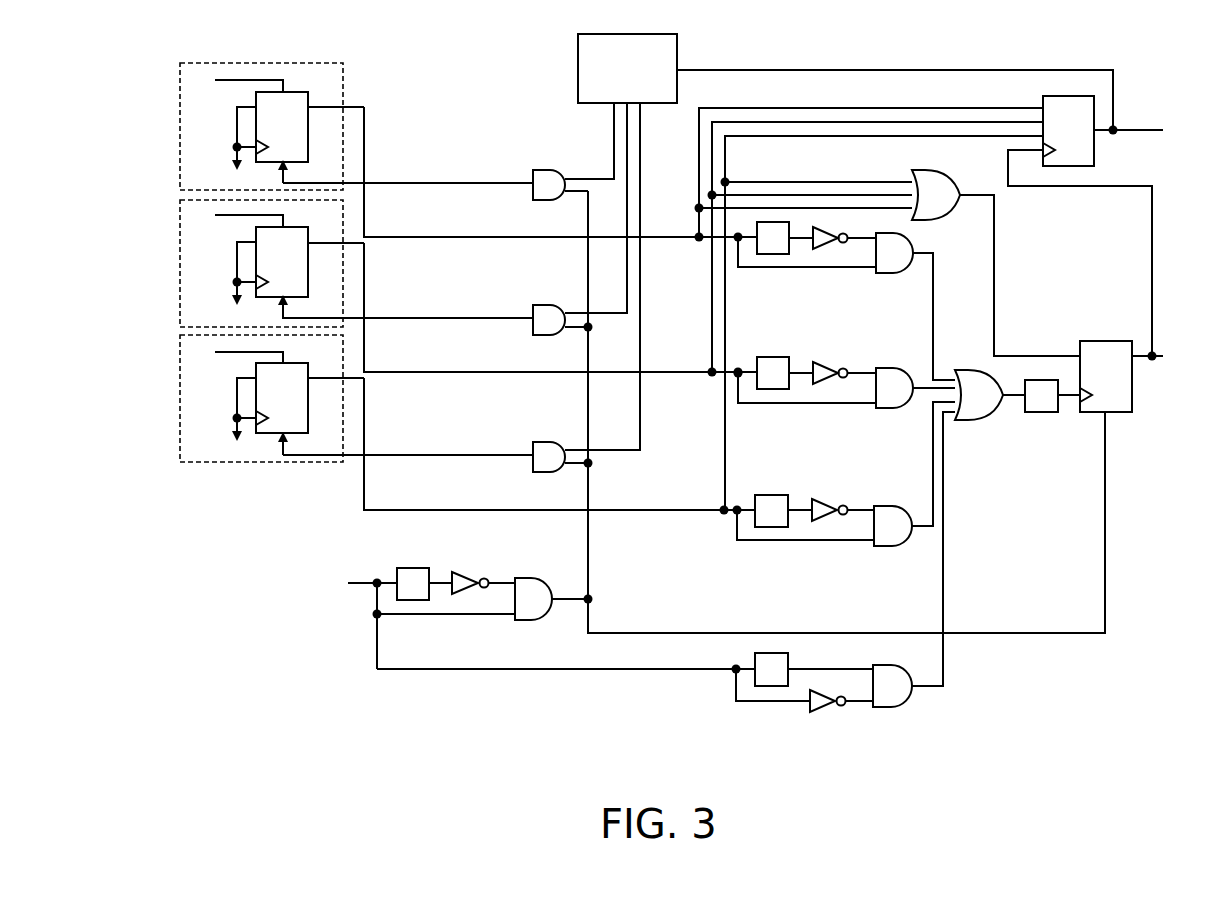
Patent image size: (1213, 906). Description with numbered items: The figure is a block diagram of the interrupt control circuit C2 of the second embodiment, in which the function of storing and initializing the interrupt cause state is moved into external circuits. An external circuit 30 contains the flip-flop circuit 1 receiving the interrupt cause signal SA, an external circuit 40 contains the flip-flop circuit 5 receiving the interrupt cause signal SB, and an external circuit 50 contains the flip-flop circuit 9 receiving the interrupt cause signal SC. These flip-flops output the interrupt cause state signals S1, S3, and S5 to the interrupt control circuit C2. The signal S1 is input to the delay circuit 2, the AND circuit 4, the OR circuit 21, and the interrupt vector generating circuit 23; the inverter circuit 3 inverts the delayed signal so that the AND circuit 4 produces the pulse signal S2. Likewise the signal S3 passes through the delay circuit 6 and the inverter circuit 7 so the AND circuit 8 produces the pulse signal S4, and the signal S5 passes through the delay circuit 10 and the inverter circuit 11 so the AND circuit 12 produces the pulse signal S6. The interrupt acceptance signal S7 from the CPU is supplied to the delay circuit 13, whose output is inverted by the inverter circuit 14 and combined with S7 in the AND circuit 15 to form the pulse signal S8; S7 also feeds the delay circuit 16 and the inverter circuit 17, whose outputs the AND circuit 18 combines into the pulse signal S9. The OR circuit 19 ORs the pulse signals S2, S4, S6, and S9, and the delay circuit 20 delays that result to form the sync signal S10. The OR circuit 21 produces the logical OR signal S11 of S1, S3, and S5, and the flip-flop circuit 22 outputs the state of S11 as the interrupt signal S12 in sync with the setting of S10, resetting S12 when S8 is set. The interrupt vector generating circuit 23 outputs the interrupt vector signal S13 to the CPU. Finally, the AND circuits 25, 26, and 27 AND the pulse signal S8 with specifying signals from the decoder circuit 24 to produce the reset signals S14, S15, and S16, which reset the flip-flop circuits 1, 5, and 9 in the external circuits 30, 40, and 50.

The flip-flop circuit 1 is at (300, 92).
The flip-flop circuit 5 is at (300, 227).
The flip-flop circuit 9 is at (300, 363).
The delay circuit 2 is at (773, 254).
The inverter circuit 3 is at (826, 250).
The AND circuit 4 is at (890, 273).
The delay circuit 6 is at (773, 389).
The inverter circuit 7 is at (826, 384).
The AND circuit 8 is at (878, 408).
The delay circuit 10 is at (771, 527).
The inverter circuit 11 is at (826, 521).
The AND circuit 12 is at (888, 546).
The delay circuit 13 is at (413, 568).
The inverter circuit 14 is at (465, 574).
The AND circuit 15 is at (533, 578).
The delay circuit 16 is at (788, 660).
The inverter circuit 17 is at (818, 712).
The AND circuit 18 is at (906, 707).
The OR circuit 19 is at (978, 420).
The delay circuit 20 is at (1040, 412).
The OR circuit 21 is at (935, 172).
The flip-flop circuit 22 is at (1100, 341).
The interrupt vector generating circuit 23 is at (1097, 152).
The decoder circuit 24 is at (678, 50).
The AND circuit 25 is at (551, 170).
The AND circuit 26 is at (551, 305).
The AND circuit 27 is at (551, 442).
The external circuit 30 is at (180, 131).
The external circuit 40 is at (180, 264).
The external circuit 50 is at (180, 402).
The interrupt cause state signal S1 is at (476, 237).
The pulse signal S2 is at (936, 302).
The interrupt cause state signal S3 is at (476, 372).
The pulse signal S4 is at (918, 383).
The interrupt cause state signal S5 is at (476, 510).
The pulse signal S6 is at (933, 472).
The interrupt acceptance signal S7 is at (361, 583).
The pulse signal S8 is at (568, 600).
The pulse signal S9 is at (943, 662).
The sync signal S10 is at (1068, 396).
The logical OR signal S11 is at (994, 240).
The interrupt signal S12 is at (1176, 356).
The interrupt vector signal S13 is at (1143, 130).
The reset signal S14 is at (420, 183).
The reset signal S15 is at (420, 318).
The reset signal S16 is at (420, 455).
The interrupt cause signal SA is at (201, 82).
The interrupt cause signal SB is at (201, 217).
The interrupt cause signal SC is at (201, 354).
The interrupt control circuit C2 is at (672, 712).